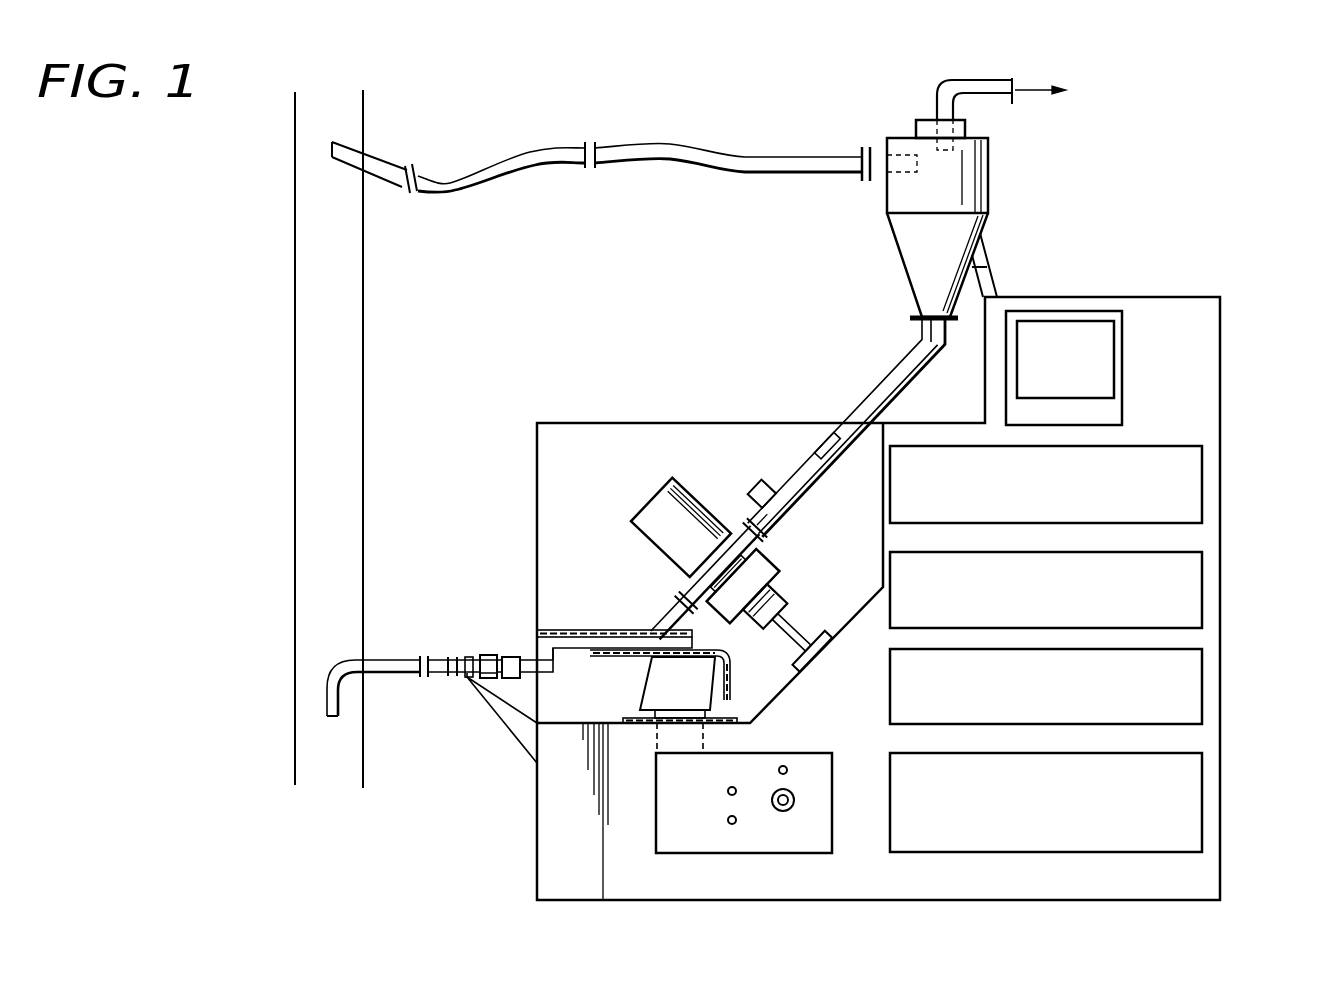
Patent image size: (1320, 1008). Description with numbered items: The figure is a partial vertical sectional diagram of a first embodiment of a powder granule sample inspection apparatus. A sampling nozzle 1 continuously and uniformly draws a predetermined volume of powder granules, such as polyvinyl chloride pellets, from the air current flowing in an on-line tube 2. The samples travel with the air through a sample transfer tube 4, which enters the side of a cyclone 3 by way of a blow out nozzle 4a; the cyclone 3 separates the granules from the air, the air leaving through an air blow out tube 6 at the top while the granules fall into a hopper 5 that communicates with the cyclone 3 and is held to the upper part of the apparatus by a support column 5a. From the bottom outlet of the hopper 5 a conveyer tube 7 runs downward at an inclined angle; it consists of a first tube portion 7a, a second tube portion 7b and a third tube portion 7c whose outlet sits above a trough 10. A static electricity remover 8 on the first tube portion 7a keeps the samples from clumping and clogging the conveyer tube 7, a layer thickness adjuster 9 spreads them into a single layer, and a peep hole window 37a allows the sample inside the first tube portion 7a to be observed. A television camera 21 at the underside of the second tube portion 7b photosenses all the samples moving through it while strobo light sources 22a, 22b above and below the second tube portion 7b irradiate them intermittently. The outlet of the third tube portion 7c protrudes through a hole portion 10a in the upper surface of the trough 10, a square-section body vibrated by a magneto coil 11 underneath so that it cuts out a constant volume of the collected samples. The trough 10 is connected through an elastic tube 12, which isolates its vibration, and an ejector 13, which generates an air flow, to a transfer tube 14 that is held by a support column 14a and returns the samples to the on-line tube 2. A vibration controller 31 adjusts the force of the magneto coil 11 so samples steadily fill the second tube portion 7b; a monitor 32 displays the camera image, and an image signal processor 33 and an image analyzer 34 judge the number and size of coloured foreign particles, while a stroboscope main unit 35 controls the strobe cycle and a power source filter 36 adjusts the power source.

The sampling nozzle 1 is at (393, 168).
The on-line tube 2 is at (357, 113).
The cyclone 3 is at (990, 182).
The sample transfer tube 4 is at (703, 153).
The blow out nozzle 4a is at (880, 153).
The hopper 5 is at (990, 230).
The support column 5a is at (992, 280).
The air blow out tube 6 is at (992, 83).
The conveyer tube 7 is at (757, 372).
The first tube portion 7a is at (905, 372).
The second tube portion 7b is at (745, 527).
The third tube portion 7c is at (667, 617).
The static electricity remover 8 is at (775, 483).
The layer thickness adjuster 9 is at (758, 512).
The trough 10 is at (565, 640).
The hole portion 10a is at (648, 627).
The magneto coil 11 is at (650, 693).
The elastic tube 12 is at (507, 657).
The ejector 13 is at (487, 657).
The transfer tube 14 is at (440, 660).
The support column 14a is at (497, 720).
The television camera 21 is at (793, 603).
The strobo light source 22a is at (772, 553).
The strobo light source 22b is at (655, 512).
The vibration controller 31 is at (807, 853).
The monitor 32 is at (1107, 352).
The image signal processor 33 is at (1202, 492).
The image analyzer 34 is at (1202, 588).
The stroboscope main unit 35 is at (1202, 690).
The power source filter 36 is at (1202, 813).
The peep hole window 37a is at (827, 440).